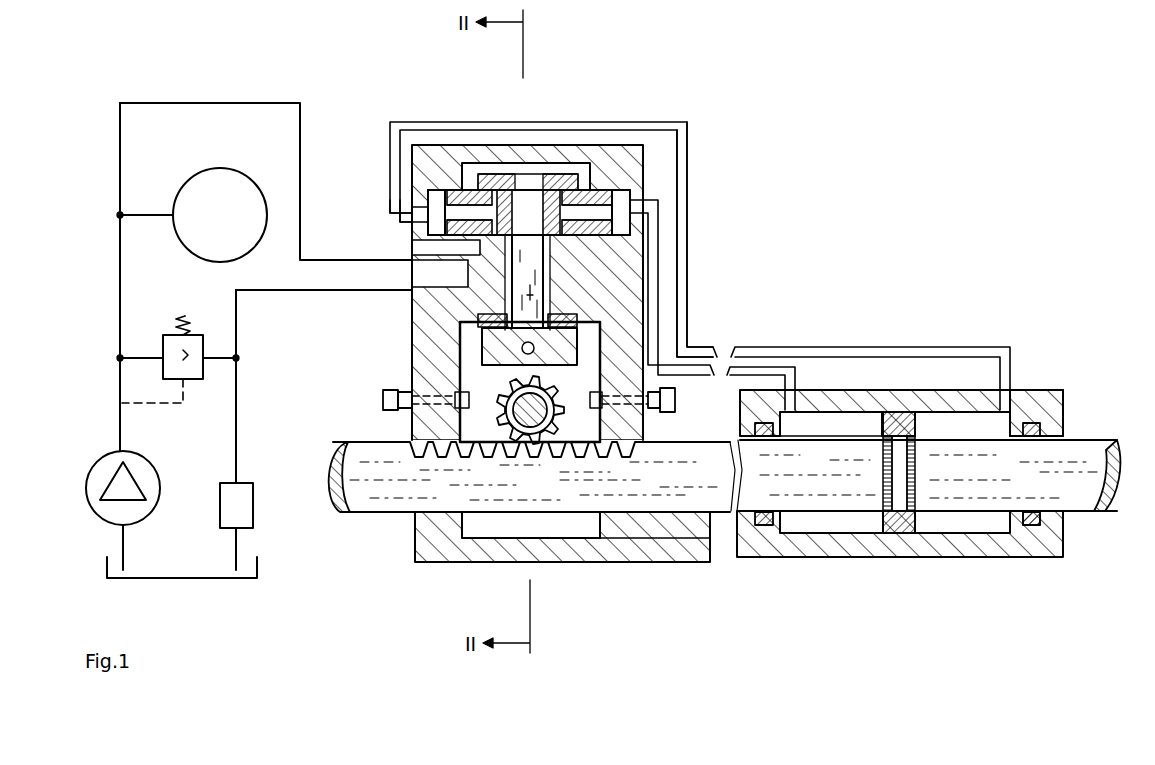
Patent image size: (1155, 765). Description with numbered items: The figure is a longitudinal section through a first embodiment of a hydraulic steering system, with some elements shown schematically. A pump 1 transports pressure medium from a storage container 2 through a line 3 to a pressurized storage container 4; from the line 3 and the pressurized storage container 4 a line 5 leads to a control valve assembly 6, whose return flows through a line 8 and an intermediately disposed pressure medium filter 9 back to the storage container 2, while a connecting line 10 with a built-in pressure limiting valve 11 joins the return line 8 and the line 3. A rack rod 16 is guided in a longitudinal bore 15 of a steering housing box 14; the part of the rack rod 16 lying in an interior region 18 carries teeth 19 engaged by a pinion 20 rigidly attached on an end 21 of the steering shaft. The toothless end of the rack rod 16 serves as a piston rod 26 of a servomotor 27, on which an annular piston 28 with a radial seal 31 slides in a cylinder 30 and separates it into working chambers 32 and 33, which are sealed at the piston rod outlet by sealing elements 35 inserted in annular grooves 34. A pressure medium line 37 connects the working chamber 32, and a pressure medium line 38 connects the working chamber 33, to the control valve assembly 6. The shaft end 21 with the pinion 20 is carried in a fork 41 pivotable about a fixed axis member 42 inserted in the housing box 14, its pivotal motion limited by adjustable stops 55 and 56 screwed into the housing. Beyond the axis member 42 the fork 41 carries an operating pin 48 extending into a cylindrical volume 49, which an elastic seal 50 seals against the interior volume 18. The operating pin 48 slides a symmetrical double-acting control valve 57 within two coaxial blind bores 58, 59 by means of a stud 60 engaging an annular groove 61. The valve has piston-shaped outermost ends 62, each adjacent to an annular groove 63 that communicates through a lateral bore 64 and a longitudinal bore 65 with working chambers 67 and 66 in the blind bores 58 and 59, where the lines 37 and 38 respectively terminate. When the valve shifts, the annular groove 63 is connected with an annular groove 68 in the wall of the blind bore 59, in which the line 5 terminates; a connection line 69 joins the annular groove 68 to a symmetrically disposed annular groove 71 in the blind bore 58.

The pump 1 is at (93, 490).
The storage container 2 is at (172, 570).
The line 3 is at (121, 265).
The pressurized storage container 4 is at (227, 180).
The line 5 is at (203, 103).
The control valve assembly 6 is at (595, 130).
The return line 8 is at (238, 462).
The filter 9 is at (248, 522).
The connecting line 10 is at (130, 350).
The pressure limiting valve 11 is at (195, 350).
The steering housing box 14 is at (418, 562).
The longitudinal bore 15 is at (400, 515).
The rack rod 16 is at (655, 530).
The interior region 18 is at (535, 540).
The teeth 19 is at (600, 540).
The pinion 20 is at (460, 360).
The end of steering shaft 21 is at (525, 445).
The piston rod 26 is at (840, 515).
The servomotor 27 is at (940, 568).
The piston 28 is at (935, 400).
The cylinder 30 is at (1030, 405).
The radial seal 31 is at (897, 533).
The working chamber 32 is at (855, 425).
The working chamber 33 is at (990, 522).
The annular grooves 34 is at (762, 527).
The sealing elements 35 is at (1043, 520).
The pressure medium line 37 is at (752, 368).
The pressure medium line 38 is at (913, 347).
The fork 41 is at (482, 345).
The axis member 42 is at (535, 348).
The operating pin 48 is at (543, 260).
The cylindrical volume 49 is at (540, 290).
The elastic seal 50 is at (578, 318).
The adjustable stop 55 is at (415, 410).
The adjustable stop 56 is at (590, 395).
The double-acting control valve 57 is at (672, 165).
The blind bore 58 is at (660, 205).
The blind bore 59 is at (405, 214).
The stud 60 is at (412, 274).
The annular groove 61 is at (530, 190).
The piston-shaped outermost ends 62 is at (435, 190).
The annular groove 63 is at (490, 190).
The lateral bore 64 is at (480, 190).
The longitudinal bore 65 is at (500, 205).
The working chamber 66 is at (445, 238).
The working chamber 67 is at (640, 235).
The annular groove 68 is at (432, 165).
The connection line 69 is at (630, 190).
The annular groove 71 is at (580, 215).